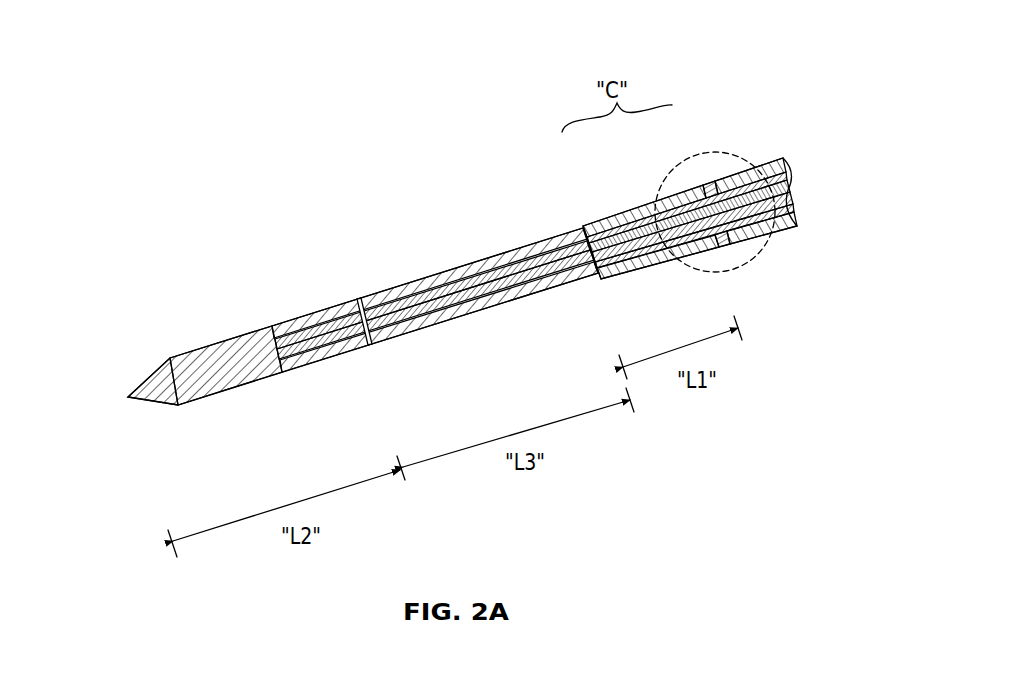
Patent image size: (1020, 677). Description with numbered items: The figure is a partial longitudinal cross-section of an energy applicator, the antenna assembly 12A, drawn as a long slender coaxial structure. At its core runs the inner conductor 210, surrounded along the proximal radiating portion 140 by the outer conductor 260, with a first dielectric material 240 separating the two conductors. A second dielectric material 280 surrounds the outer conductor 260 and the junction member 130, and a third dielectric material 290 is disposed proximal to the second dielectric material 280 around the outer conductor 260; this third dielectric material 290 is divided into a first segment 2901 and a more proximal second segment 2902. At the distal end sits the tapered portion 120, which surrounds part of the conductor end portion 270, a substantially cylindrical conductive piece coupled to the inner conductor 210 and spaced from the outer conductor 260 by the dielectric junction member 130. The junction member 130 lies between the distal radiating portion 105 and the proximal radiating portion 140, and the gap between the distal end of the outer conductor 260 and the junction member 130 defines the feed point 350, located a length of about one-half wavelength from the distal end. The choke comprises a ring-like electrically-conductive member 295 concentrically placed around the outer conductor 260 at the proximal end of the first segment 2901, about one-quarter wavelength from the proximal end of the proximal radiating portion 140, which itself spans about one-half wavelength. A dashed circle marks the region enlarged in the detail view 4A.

The distal radiating portion 105 is at (196, 414).
The tapered portion 120 is at (140, 383).
The conductor end portion 270 is at (228, 362).
The junction member 130 is at (307, 316).
The proximal radiating portion 140 is at (428, 346).
The second dielectric material 280 is at (492, 302).
The feed point 350 is at (345, 301).
The third dielectric material 290 is at (612, 222).
The first segment 2901 is at (627, 213).
The second segment 2902 is at (730, 175).
The electrically-conductive member 295 is at (702, 184).
The outer conductor 260 is at (790, 172).
The inner conductor 210 is at (790, 192).
The first dielectric material 240 is at (791, 204).
The antenna assembly 12A is at (365, 181).
The detail region 4A is at (752, 264).